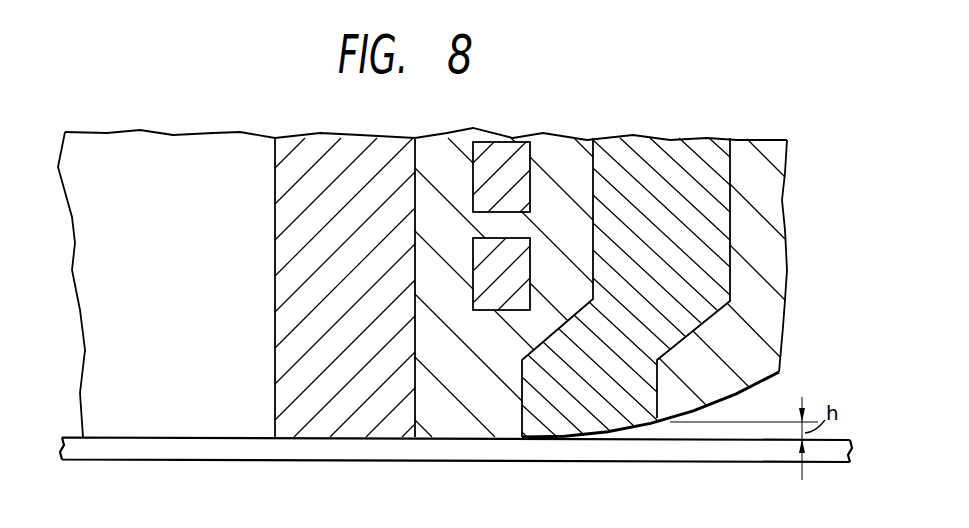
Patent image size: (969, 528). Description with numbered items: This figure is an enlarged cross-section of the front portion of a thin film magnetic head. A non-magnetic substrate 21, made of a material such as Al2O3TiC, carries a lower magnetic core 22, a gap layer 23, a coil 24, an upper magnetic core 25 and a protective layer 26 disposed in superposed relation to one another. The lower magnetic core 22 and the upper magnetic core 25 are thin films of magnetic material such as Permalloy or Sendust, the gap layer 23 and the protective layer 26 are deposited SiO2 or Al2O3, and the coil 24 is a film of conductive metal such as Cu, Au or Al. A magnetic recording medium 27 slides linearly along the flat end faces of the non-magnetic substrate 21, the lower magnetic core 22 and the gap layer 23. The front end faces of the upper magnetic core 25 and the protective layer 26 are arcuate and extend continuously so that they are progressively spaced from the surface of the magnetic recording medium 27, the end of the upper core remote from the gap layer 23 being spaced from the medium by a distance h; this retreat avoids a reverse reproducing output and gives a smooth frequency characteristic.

The non-magnetic substrate 21 is at (218, 157).
The lower magnetic core 22 is at (342, 157).
The gap layer 23 is at (497, 412).
The coil 24 is at (518, 160).
The upper magnetic core 25 is at (663, 167).
The protective layer 26 is at (727, 378).
The magnetic recording medium 27 is at (180, 447).